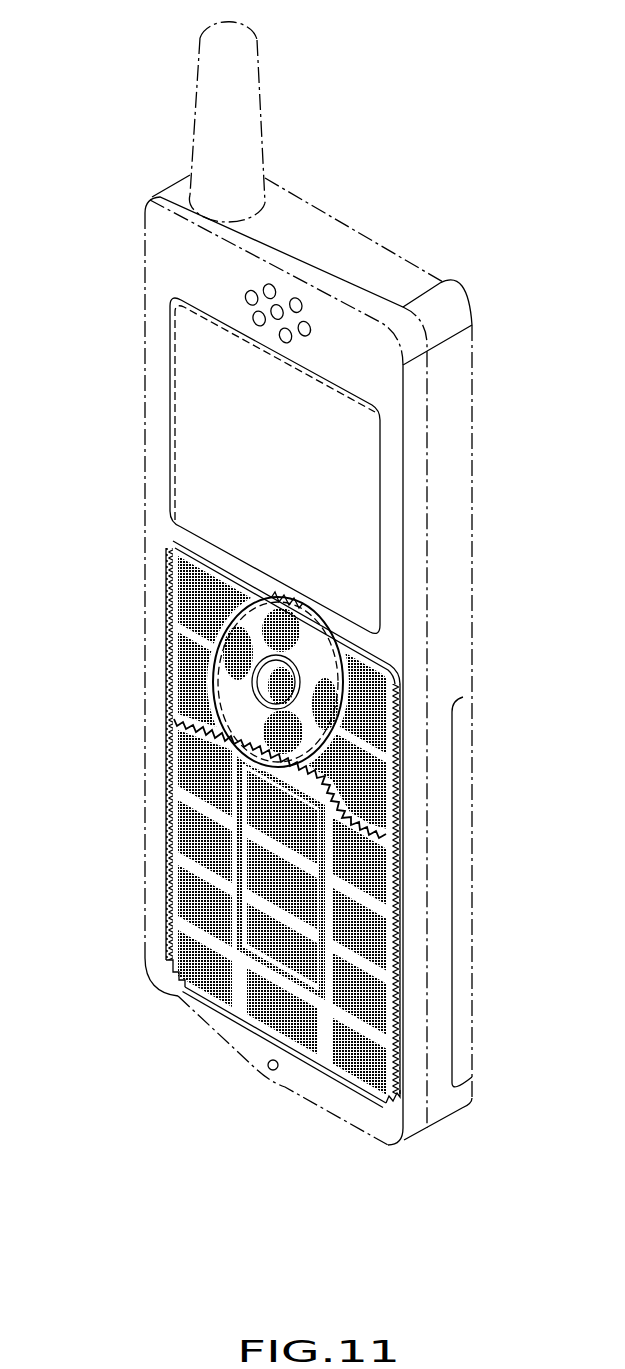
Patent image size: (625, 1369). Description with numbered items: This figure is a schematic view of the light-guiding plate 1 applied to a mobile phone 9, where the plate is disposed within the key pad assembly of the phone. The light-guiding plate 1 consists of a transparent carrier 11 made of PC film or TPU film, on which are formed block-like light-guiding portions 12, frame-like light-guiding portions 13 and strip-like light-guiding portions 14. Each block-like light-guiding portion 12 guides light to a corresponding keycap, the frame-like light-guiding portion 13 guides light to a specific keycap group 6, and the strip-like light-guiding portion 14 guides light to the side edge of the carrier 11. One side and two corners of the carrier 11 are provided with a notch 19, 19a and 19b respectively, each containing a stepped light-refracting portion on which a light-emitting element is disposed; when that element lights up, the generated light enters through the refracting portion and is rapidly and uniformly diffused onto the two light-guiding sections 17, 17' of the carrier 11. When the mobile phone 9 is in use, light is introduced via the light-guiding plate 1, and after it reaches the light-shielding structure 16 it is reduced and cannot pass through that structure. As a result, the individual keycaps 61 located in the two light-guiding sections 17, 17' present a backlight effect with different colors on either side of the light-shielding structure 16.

The mobile phone 9 is at (450, 457).
The light-guiding plate 1 is at (390, 647).
The carrier 11 is at (213, 567).
The block-like light-guiding portion 12 is at (307, 1048).
The frame-like light-guiding portion 13 is at (237, 875).
The strip-like light-guiding portion 14 is at (165, 754).
The light-shielding structure 16 is at (374, 820).
The light-guiding section 17 is at (286, 599).
The light-guiding section 17' is at (285, 1048).
The notch 19 is at (286, 591).
The notch 19a is at (394, 1096).
The notch 19b is at (166, 969).
The keycap group 6 is at (388, 963).
The keycap 61 is at (382, 1030).